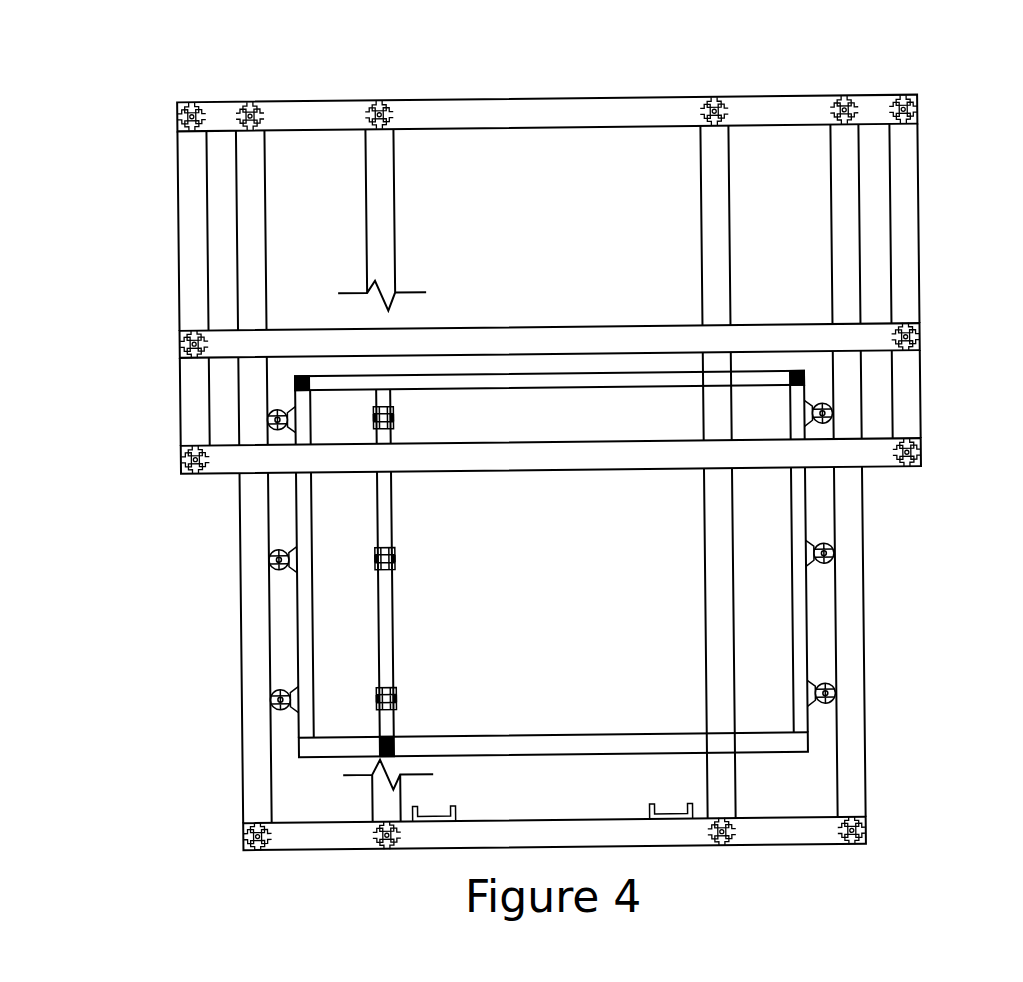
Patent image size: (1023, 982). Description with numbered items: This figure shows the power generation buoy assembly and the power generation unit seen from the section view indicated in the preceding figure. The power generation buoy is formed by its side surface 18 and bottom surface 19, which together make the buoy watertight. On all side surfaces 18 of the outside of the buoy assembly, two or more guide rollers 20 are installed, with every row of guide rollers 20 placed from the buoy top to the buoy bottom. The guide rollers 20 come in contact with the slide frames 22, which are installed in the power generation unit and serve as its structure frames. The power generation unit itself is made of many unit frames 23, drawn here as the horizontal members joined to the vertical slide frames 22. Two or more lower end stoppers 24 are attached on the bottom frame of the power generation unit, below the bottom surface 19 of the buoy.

The side surface 18 is at (539, 583).
The bottom surface 19 is at (564, 740).
The guide roller 20 is at (389, 406).
The slide frame 22 is at (252, 259).
The unit frame 23 is at (544, 113).
The lower end stopper 24 is at (432, 813).